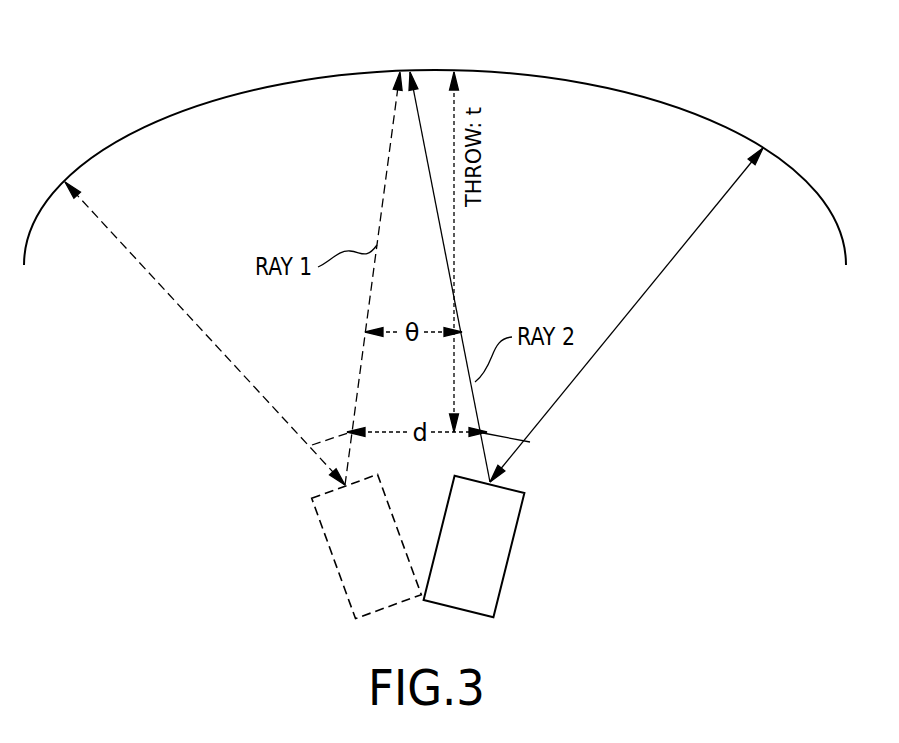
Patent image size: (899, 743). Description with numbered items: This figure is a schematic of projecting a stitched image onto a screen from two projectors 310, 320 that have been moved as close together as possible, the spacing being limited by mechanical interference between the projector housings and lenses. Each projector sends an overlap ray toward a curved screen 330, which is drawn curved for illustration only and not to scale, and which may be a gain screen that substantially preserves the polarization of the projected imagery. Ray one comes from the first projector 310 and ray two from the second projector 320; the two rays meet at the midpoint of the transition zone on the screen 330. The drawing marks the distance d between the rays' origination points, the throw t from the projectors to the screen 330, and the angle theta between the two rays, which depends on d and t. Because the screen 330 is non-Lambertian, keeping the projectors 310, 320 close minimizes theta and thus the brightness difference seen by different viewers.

The first projector 310 is at (355, 574).
The second projector 320 is at (450, 584).
The curved screen 330 is at (677, 107).